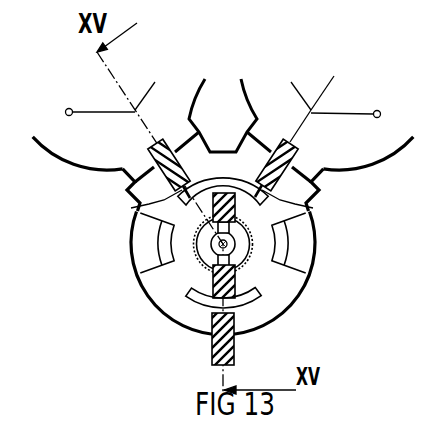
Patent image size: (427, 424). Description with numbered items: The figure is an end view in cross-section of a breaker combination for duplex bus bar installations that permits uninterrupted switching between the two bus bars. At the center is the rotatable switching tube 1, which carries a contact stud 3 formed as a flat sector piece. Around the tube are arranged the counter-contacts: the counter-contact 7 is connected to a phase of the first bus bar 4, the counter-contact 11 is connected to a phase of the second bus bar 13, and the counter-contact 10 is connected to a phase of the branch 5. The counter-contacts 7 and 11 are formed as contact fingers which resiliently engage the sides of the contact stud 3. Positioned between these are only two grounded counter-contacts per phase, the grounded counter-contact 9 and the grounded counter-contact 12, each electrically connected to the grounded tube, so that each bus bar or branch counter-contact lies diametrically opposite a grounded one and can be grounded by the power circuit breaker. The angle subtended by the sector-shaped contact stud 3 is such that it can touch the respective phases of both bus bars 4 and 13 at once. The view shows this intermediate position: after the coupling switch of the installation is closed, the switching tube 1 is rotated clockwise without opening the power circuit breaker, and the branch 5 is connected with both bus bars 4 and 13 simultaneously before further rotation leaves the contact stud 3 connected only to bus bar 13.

The switching tube 1 is at (223, 244).
The contact stud 3 is at (224, 193).
The bus bar 4 is at (104, 152).
The branch 5 is at (231, 352).
The counter-contact 7 is at (131, 212).
The grounded counter-contact 9 is at (305, 252).
The counter-contact 10 is at (262, 303).
The counter-contact 11 is at (309, 208).
The grounded counter-contact 12 is at (146, 245).
The bus bar 13 is at (348, 152).